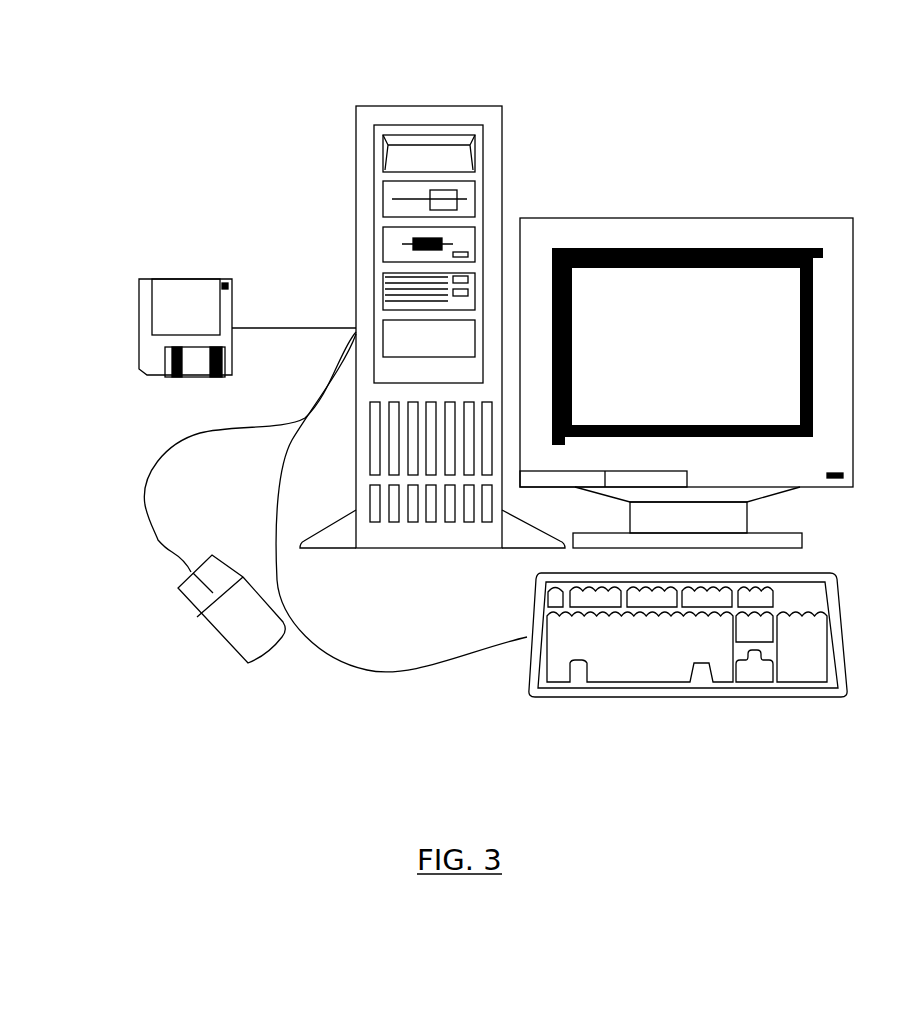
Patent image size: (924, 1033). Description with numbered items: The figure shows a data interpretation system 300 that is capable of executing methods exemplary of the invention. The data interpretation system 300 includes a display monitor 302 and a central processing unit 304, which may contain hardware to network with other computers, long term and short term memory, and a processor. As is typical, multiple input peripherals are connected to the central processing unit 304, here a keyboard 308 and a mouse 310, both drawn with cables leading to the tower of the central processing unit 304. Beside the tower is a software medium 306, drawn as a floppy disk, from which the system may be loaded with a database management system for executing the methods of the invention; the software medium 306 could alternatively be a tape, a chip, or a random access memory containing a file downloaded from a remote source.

The data interpretation system 300 is at (238, 96).
The display monitor 302 is at (690, 218).
The central processing unit 304 is at (412, 106).
The software medium 306 is at (205, 317).
The keyboard 308 is at (685, 697).
The mouse 310 is at (200, 612).